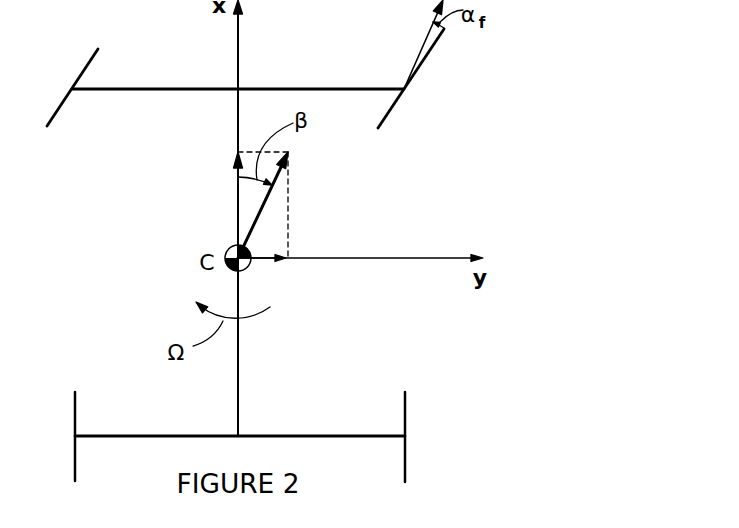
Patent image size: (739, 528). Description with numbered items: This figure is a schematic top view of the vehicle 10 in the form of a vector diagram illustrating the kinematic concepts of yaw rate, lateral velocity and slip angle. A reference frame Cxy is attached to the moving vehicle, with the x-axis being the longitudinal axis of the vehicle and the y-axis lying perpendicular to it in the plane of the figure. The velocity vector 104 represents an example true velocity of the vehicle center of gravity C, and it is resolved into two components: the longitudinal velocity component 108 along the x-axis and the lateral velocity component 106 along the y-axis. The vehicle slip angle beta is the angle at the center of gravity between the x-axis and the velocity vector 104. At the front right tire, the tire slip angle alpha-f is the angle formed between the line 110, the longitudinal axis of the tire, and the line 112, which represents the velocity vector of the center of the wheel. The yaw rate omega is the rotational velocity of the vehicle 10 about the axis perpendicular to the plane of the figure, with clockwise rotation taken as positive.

The vehicle 10 is at (524, 97).
The velocity vector 104 is at (263, 208).
The lateral velocity component 106 is at (258, 261).
The longitudinal velocity component 108 is at (238, 207).
The line 110 is at (440, 35).
The line 112 is at (422, 50).